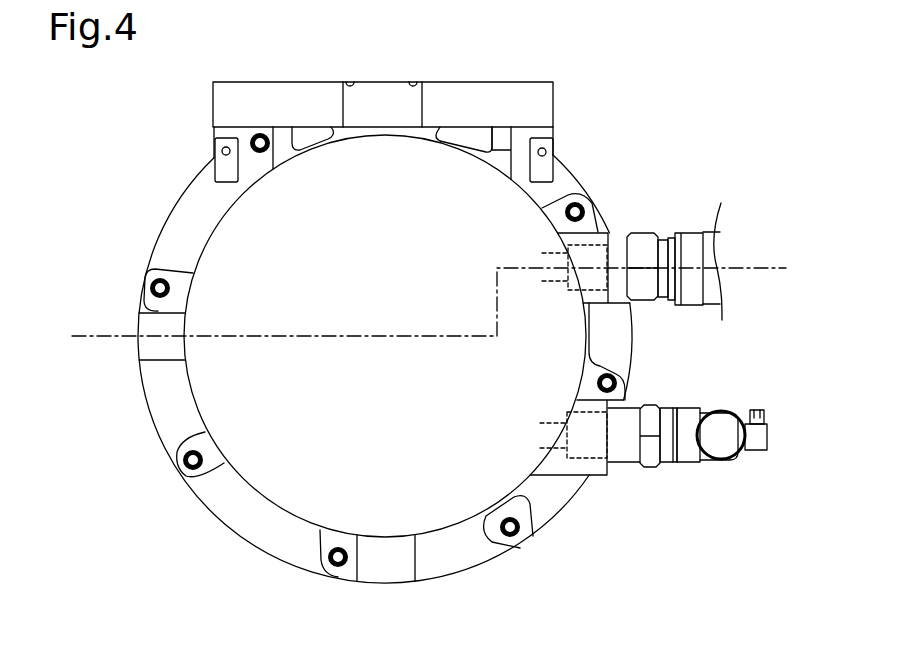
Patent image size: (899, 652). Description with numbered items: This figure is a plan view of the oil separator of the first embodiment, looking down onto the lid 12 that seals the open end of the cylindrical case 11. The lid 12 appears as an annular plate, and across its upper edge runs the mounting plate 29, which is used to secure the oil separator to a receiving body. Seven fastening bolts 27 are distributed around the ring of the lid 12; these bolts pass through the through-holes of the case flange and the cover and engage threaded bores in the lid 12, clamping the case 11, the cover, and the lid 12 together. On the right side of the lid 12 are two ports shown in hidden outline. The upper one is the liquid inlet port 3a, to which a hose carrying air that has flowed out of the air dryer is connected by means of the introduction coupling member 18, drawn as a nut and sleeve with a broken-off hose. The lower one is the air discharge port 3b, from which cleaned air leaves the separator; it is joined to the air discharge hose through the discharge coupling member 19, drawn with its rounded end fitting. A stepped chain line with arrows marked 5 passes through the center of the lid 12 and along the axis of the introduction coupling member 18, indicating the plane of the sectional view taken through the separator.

The case 11 is at (162, 231).
The lid 12 is at (220, 216).
The mounting plate 29 is at (553, 100).
The liquid inlet port 3a is at (610, 250).
The air discharge port 3b is at (605, 452).
The introduction coupling member 18 is at (679, 233).
The discharge coupling member 19 is at (719, 409).
The bolt 27 is at (261, 153).
The section line V-V 5 is at (72, 336).